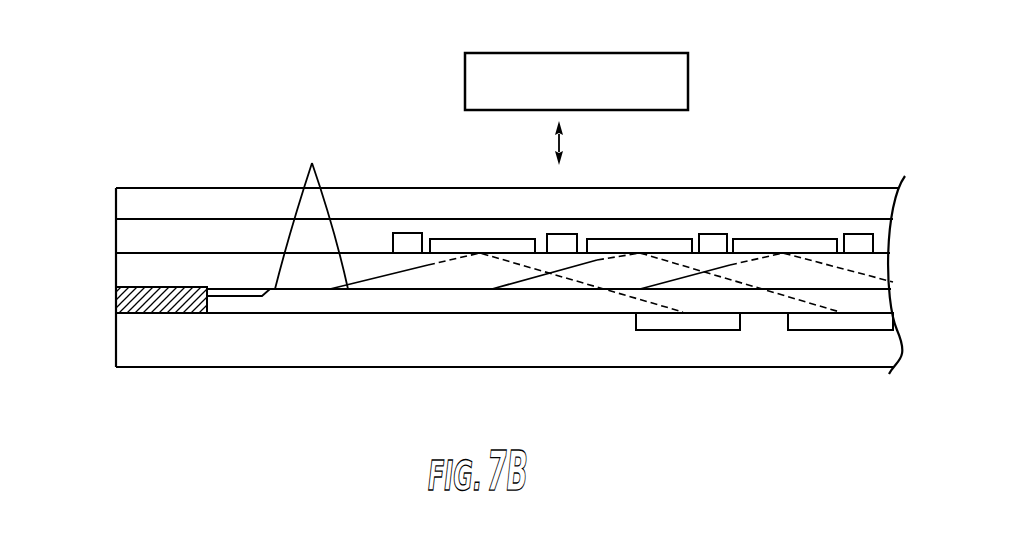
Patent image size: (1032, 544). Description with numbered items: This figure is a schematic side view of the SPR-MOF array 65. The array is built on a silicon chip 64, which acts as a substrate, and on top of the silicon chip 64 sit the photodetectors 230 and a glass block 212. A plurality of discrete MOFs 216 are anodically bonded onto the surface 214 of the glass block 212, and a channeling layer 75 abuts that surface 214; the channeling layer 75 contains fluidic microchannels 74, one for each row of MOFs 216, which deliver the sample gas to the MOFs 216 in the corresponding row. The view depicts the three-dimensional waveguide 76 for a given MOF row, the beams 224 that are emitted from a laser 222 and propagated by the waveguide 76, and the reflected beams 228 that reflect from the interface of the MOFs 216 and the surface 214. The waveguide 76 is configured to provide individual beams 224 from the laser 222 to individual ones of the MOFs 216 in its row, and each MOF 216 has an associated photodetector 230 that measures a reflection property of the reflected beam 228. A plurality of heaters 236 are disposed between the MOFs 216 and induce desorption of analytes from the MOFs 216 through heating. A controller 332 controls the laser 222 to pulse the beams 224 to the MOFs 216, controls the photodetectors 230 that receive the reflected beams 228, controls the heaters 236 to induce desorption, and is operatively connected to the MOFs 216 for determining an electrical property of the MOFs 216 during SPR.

The controller 332 is at (625, 53).
The SPR-MOF array 65 is at (900, 125).
The channeling layer 75 is at (116, 207).
The fluidic microchannel 74 is at (116, 238).
The surface 214 is at (143, 250).
The glass block 212 is at (116, 275).
The laser 222 is at (116, 305).
The silicon chip 64 is at (116, 344).
The 3D waveguide 76 is at (662, 276).
The beam 224 is at (598, 260).
The reflected beam 228 is at (828, 265).
The MOF 216 is at (485, 239).
The heater 236 is at (408, 233).
The photodetector 230 is at (834, 337).